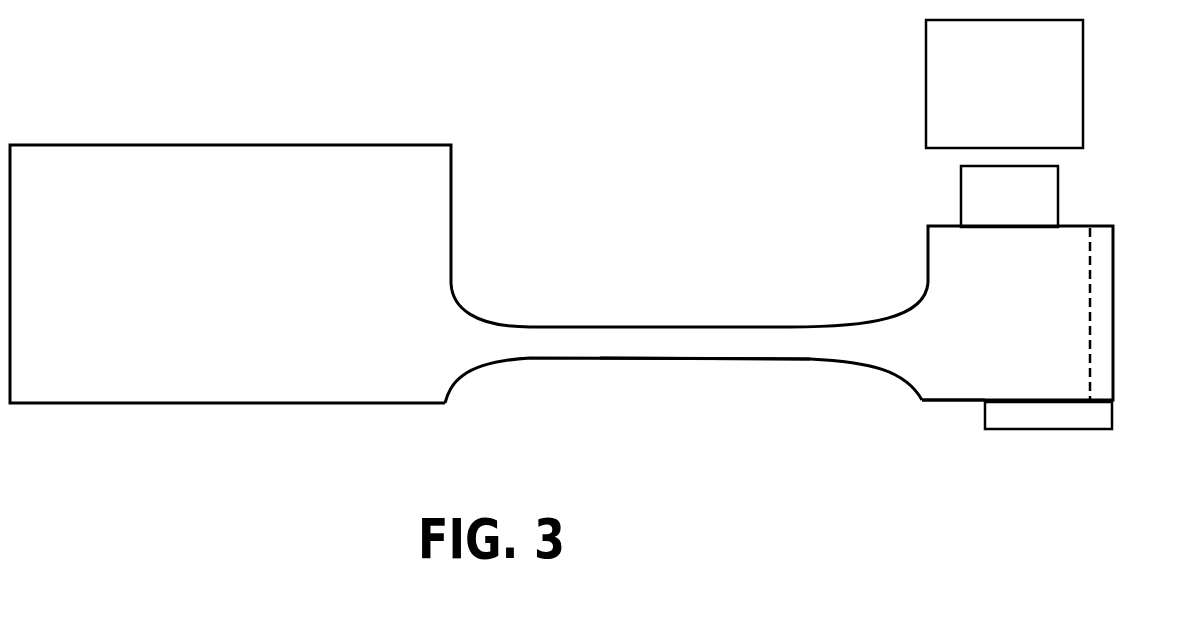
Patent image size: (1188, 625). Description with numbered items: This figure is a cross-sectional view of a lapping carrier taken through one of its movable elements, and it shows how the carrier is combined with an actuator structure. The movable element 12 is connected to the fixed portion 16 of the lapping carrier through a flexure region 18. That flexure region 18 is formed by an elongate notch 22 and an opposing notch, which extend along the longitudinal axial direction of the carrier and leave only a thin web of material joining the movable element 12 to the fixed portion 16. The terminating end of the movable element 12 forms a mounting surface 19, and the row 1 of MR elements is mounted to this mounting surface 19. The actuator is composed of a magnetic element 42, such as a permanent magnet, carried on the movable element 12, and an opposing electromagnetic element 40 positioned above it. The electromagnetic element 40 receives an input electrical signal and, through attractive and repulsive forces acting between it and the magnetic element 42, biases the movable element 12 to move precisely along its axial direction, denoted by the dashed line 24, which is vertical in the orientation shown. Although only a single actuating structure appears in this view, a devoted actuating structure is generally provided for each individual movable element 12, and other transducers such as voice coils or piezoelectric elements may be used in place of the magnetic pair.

The row of MR elements 1 is at (1012, 427).
The movable element 12 is at (1056, 279).
The fixed portion 16 is at (332, 162).
The flexure region 18 is at (750, 343).
The mounting surface 19 is at (947, 402).
The elongate notch 22 is at (699, 406).
The direction 24 is at (1092, 253).
The electromagnetic element 40 is at (952, 103).
The magnetic element 42 is at (975, 195).